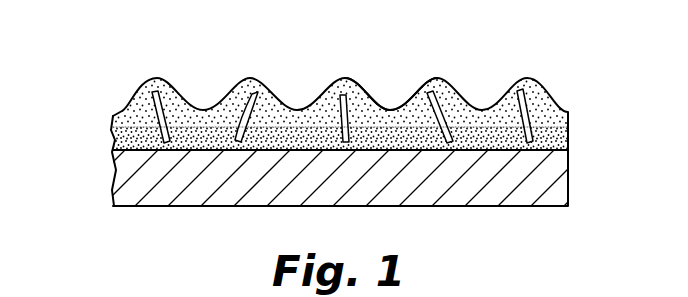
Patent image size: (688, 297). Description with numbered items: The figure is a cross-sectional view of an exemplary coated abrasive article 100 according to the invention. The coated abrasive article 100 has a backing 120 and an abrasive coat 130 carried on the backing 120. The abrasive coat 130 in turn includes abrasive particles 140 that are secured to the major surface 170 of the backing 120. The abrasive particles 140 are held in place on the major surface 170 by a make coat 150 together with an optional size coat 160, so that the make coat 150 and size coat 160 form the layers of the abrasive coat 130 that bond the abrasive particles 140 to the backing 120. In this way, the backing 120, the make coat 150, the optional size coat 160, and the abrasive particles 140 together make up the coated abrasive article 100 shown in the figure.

The coated abrasive article 100 is at (455, 48).
The backing 120 is at (210, 207).
The abrasive coat 130 is at (580, 75).
The abrasive particles 140 is at (350, 99).
The make coat 150 is at (113, 134).
The size coat 160 is at (135, 105).
The major surface 170 is at (530, 149).